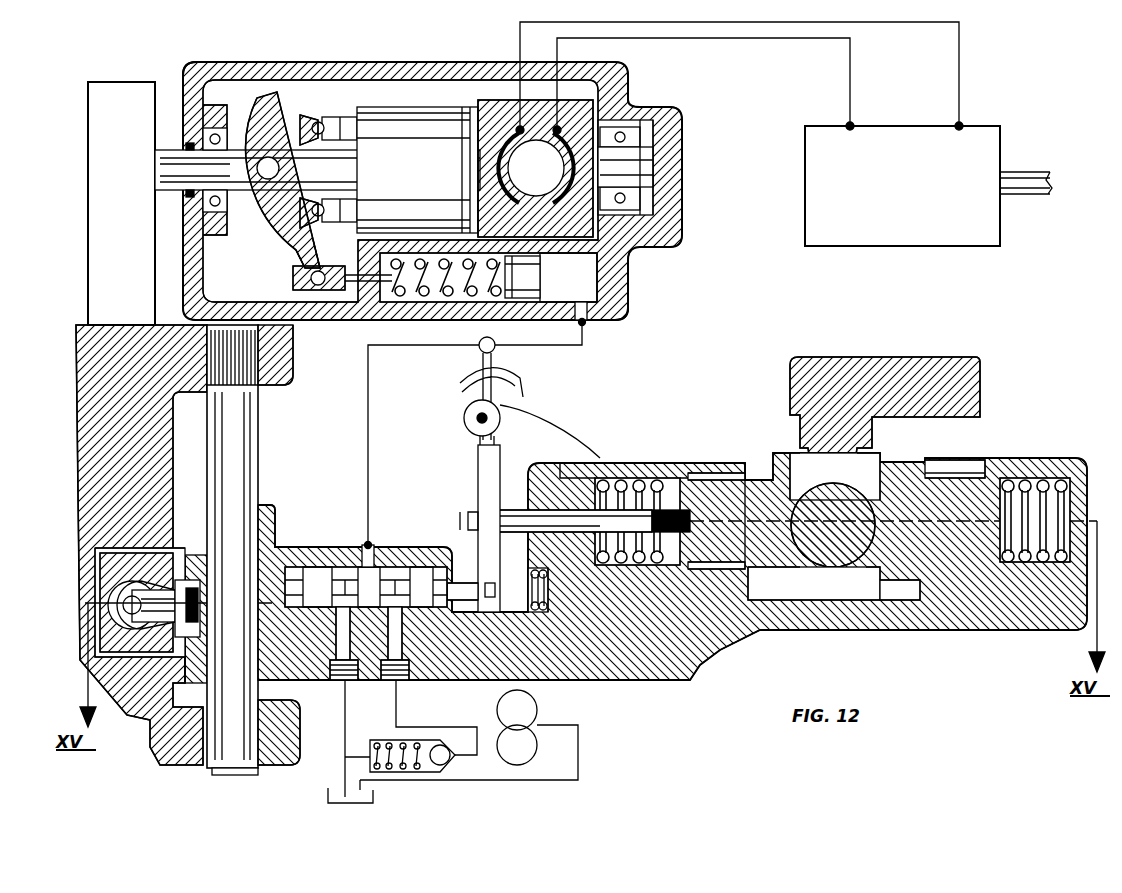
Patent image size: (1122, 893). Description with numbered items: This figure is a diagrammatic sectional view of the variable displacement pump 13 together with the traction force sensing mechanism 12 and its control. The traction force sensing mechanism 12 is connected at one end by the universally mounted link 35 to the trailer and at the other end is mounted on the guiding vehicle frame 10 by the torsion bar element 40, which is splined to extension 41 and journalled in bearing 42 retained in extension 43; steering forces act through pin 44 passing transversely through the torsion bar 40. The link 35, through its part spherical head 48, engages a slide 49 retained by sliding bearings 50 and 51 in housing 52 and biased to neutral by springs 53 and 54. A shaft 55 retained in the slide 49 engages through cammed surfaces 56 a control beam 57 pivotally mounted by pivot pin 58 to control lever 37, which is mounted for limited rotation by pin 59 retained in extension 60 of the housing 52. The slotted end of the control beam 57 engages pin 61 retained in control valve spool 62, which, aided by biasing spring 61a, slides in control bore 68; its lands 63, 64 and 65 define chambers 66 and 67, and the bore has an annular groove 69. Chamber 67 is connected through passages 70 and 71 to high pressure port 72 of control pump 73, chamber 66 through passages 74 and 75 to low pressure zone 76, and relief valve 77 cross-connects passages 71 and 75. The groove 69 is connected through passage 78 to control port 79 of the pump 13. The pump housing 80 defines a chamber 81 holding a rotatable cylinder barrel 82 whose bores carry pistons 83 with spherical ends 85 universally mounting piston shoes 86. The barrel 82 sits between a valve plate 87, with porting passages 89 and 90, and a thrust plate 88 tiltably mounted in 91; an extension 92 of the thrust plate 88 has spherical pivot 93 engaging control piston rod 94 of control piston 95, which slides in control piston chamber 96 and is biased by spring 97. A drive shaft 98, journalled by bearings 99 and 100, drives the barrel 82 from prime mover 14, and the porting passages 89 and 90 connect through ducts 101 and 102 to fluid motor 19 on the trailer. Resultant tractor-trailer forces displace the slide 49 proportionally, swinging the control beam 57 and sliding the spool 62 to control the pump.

The guiding vehicle frame 10 is at (74, 356).
The traction force sensing mechanism 12 is at (692, 676).
The variable displacement pump 13 is at (634, 258).
The prime mover 14 is at (90, 165).
The fluid motor 19 is at (808, 206).
The universally mounted link 35 is at (922, 357).
The control lever 37 is at (497, 372).
The torsion bar element 40 is at (256, 441).
The extension 41 is at (296, 352).
The bearing 42 is at (262, 766).
The extension 43 is at (297, 712).
The pin 44 is at (233, 594).
The part spherical head 48 is at (822, 560).
The slide 49 is at (755, 468).
The sliding bearing 50 is at (955, 470).
The sliding bearing 51 is at (702, 473).
The housing 52 is at (650, 462).
The spring 53 is at (1032, 475).
The spring 54 is at (606, 480).
The shaft 55 is at (512, 512).
The cammed surfaces 56 is at (468, 514).
The control beam 57 is at (478, 472).
The pivot pin 58 is at (481, 455).
The pin 59 is at (500, 418).
The extension 60 is at (548, 442).
The pin 61 is at (490, 600).
The biasing spring 61a is at (540, 612).
The control valve spool 62 is at (470, 583).
The land 63 is at (440, 567).
The land 64 is at (375, 567).
The land 65 is at (298, 567).
The chamber 66 is at (345, 570).
The chamber 67 is at (405, 567).
The control bore 68 is at (300, 547).
The annular groove 69 is at (358, 612).
The passage 70 is at (405, 640).
The passage 71 is at (400, 710).
The high pressure port 72 is at (500, 716).
The control pump 73 is at (536, 748).
The passage 74 is at (357, 660).
The passage 75 is at (349, 716).
The low pressure zone 76 is at (336, 790).
The relief valve 77 is at (385, 748).
The passage 78 is at (370, 430).
The control port 79 is at (587, 330).
The pump housing 80 is at (362, 62).
The chamber 81 is at (418, 62).
The cylinder barrel 82 is at (392, 107).
The piston 83 is at (340, 117).
The spherical end 85 is at (318, 122).
The piston shoe 86 is at (303, 115).
The valve plate 87 is at (480, 105).
The thrust plate 88 is at (255, 110).
The porting passage 89 is at (500, 170).
The porting passage 90 is at (576, 180).
The tilt mount 91 is at (266, 180).
The extension 92 is at (302, 258).
The spherical pivot 93 is at (300, 282).
The control piston rod 94 is at (440, 297).
The control piston 95 is at (540, 280).
The control piston chamber 96 is at (598, 290).
The spring 97 is at (395, 300).
The drive shaft 98 is at (168, 182).
The bearing 99 is at (220, 240).
The bearing 100 is at (640, 210).
The duct 101 is at (518, 40).
The duct 102 is at (700, 40).